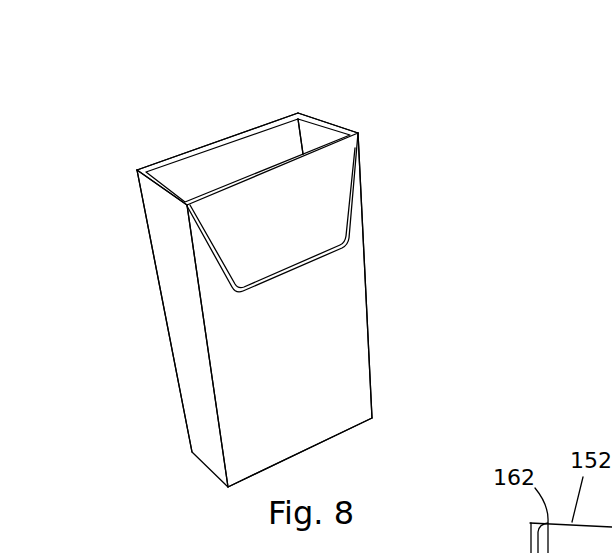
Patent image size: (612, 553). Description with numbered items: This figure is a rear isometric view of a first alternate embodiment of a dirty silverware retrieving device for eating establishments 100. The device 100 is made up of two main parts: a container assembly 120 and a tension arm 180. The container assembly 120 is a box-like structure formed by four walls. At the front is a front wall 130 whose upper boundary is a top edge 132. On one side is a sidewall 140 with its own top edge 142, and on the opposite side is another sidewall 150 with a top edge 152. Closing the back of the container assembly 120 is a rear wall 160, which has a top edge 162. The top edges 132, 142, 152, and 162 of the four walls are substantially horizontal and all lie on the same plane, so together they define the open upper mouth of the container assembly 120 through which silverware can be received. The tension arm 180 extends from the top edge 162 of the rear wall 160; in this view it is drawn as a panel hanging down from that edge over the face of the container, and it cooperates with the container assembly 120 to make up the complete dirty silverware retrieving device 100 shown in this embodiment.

The dirty silverware retrieving device for eating establishments 100 is at (408, 88).
The container assembly 120 is at (366, 277).
The front wall 130 is at (208, 167).
The top edge 132 is at (177, 155).
The sidewall 140 is at (177, 313).
The top edge 142 is at (158, 184).
The sidewall 150 is at (320, 133).
The top edge 152 is at (311, 119).
The rear wall 160 is at (338, 348).
The top edge 162 is at (302, 160).
The tension arm 180 is at (358, 217).